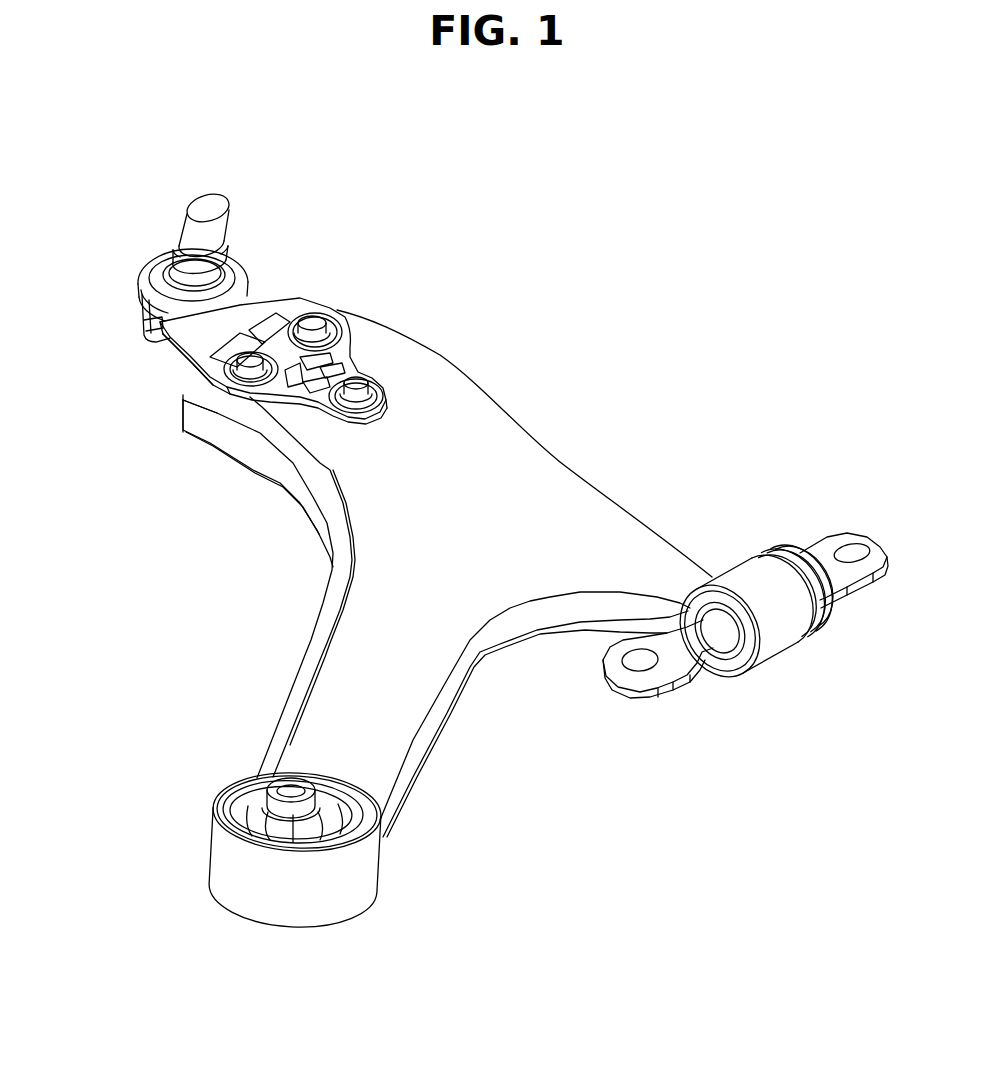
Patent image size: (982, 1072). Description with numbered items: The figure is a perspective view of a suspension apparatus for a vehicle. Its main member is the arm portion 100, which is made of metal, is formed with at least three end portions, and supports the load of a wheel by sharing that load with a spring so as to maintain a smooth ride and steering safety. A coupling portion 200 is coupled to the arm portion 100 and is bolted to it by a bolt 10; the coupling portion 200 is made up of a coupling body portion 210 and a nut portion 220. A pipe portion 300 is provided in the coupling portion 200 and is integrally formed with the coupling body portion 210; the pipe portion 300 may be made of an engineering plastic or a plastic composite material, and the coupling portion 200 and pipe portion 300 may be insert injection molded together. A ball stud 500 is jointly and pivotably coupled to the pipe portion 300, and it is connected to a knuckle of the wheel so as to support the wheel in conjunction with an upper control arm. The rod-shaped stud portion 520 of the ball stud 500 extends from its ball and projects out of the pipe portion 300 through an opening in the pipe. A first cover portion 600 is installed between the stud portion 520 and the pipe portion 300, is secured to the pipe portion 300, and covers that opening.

The arm portion 100 is at (505, 433).
The bolt 10 is at (317, 320).
The ball stud 500 is at (316, 137).
The stud portion 520 is at (228, 207).
The first cover portion 600 is at (156, 249).
The pipe portion 300 is at (146, 308).
The coupling portion 200 is at (92, 372).
The coupling body portion 210 is at (197, 370).
The nut portion 220 is at (183, 395).